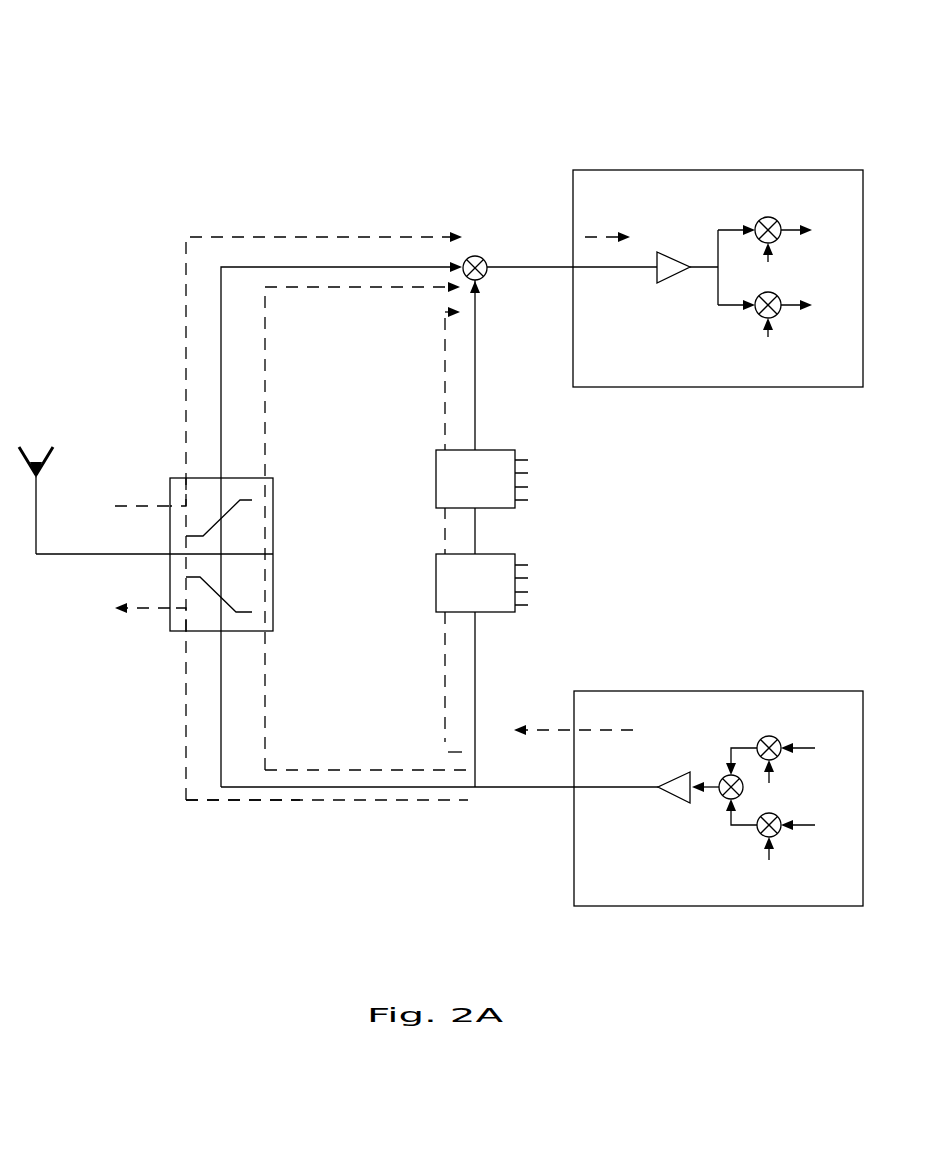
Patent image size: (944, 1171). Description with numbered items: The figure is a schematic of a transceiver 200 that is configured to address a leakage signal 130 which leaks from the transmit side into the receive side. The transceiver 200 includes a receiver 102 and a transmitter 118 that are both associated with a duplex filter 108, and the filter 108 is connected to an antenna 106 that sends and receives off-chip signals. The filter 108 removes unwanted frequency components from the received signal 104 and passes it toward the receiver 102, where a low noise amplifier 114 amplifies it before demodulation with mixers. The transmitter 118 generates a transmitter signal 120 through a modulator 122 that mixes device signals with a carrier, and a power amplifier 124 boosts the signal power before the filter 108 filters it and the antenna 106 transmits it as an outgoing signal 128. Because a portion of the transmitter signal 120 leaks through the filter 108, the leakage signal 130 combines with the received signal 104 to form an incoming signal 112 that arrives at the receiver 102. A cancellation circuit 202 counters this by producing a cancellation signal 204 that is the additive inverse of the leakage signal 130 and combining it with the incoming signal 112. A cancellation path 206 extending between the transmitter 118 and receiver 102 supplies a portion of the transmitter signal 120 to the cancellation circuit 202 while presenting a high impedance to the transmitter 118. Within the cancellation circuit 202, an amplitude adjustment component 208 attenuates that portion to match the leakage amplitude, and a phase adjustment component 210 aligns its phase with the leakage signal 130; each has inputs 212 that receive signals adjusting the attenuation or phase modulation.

The transceiver 200 is at (207, 148).
The cancellation circuit 202 is at (475, 188).
The received signal 104 is at (292, 237).
The receiver 102 is at (745, 170).
The incoming signal 112 is at (378, 287).
The leakage signal 130 is at (305, 289).
The antenna 106 is at (38, 500).
The duplex filter 108 is at (273, 517).
The cancellation path 206 is at (487, 280).
The cancellation signal 204 is at (445, 408).
The phase adjustment component 210 is at (495, 450).
The inputs 212 is at (515, 461).
The amplitude adjustment component 208 is at (495, 554).
The low noise amplifier 114 is at (668, 278).
The transmitter signal 120 is at (598, 730).
The transmitter 118 is at (745, 691).
The modulator 122 is at (786, 719).
The power amplifier 124 is at (669, 800).
The outgoing signal 128 is at (220, 800).